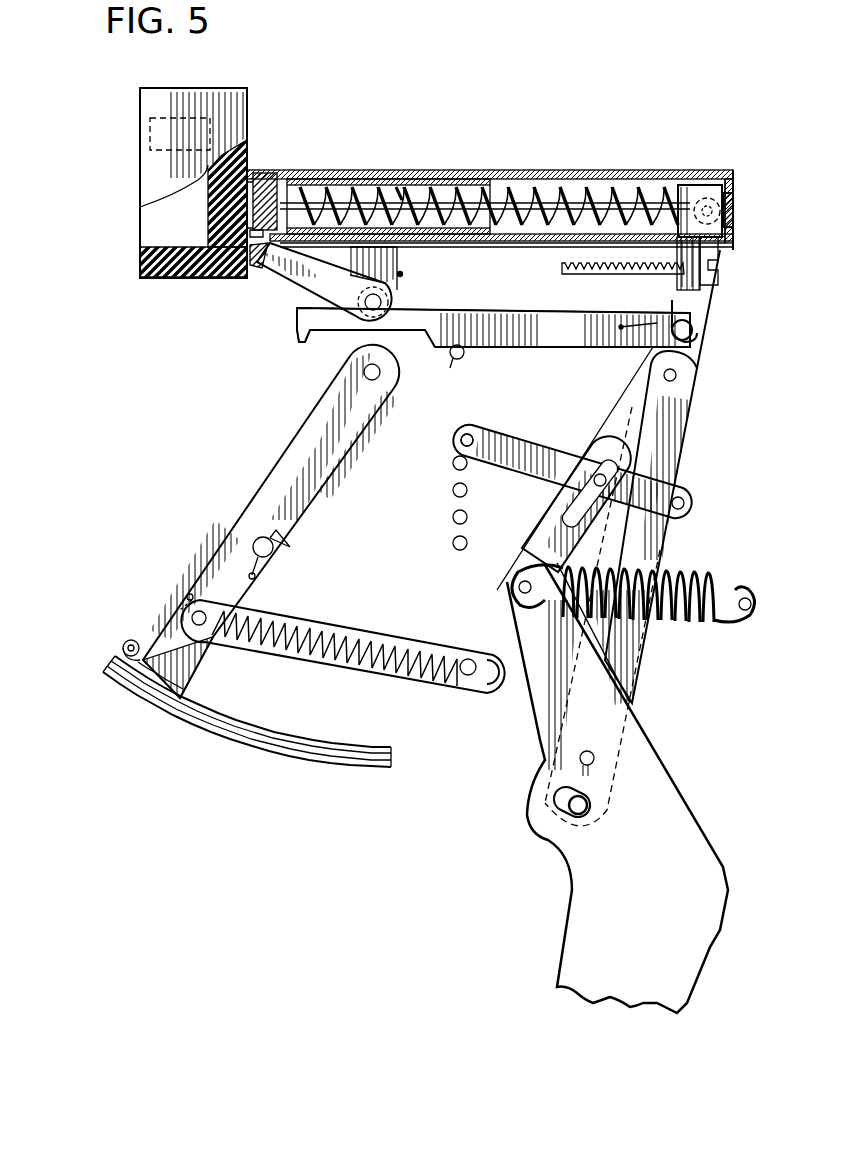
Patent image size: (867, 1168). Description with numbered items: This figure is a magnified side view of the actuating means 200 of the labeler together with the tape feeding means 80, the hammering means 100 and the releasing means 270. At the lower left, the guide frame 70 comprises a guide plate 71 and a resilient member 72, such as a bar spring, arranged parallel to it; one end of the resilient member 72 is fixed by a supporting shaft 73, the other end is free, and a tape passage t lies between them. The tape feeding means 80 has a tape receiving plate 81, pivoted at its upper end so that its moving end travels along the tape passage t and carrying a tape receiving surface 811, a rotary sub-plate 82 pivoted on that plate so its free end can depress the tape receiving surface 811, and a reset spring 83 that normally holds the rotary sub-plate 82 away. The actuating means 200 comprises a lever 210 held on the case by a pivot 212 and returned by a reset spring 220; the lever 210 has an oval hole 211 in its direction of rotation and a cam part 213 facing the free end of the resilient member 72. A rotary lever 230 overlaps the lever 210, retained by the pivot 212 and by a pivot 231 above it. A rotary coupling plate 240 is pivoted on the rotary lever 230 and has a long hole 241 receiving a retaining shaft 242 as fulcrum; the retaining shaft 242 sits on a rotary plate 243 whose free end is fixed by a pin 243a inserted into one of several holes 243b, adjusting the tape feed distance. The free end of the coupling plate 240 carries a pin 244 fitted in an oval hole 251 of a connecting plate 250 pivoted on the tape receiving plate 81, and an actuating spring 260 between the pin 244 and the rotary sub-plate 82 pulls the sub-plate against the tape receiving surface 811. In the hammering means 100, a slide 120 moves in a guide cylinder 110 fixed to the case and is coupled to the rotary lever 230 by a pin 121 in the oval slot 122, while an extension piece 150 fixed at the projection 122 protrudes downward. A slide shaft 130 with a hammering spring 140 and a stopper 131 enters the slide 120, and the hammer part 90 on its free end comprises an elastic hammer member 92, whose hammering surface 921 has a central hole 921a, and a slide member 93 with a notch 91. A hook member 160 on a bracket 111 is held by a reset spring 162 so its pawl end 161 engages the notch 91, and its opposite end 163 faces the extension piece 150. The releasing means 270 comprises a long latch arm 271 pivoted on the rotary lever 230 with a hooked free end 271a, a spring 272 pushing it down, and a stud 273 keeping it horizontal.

The guide frame 70 is at (314, 812).
The guide plate 71 is at (258, 755).
The resilient member 72 is at (345, 762).
The supporting shaft 73 is at (122, 645).
The tape feeding means 80 is at (268, 470).
The tape receiving plate 81 is at (195, 670).
The tape receiving surface 811 is at (152, 698).
The rotary sub-plate 82 is at (168, 616).
The reset spring 83 is at (292, 547).
The hammer part 90 is at (205, 110).
The notch 91 is at (268, 172).
The hammer member 92 is at (157, 133).
The slide member 93 is at (497, 178).
The hammering surface 921 is at (140, 110).
The hole 921a is at (157, 223).
The hammering means 100 is at (520, 165).
The guide cylinder 110 is at (560, 170).
The bracket 111 is at (440, 250).
The slide 120 is at (685, 185).
The pin 121 is at (705, 198).
The projection 122 is at (698, 185).
The slide shaft 130 is at (378, 186).
The stopper 131 is at (730, 193).
The hammering spring 140 is at (330, 200).
The extension piece 150 is at (560, 271).
The hook member 160 is at (398, 298).
The pawl end 161 is at (252, 272).
The reset spring 162 is at (405, 274).
The end 163 is at (400, 186).
The actuating means 200 is at (447, 703).
The lever 210 is at (573, 953).
The oval hole 211 is at (566, 812).
The pivot 212 is at (588, 805).
The cam part 213 is at (536, 808).
The reset spring 220 is at (690, 625).
The rotary lever 230 is at (618, 680).
The pivot 231 is at (595, 758).
The rotary coupling plate 240 is at (540, 556).
The long hole 241 is at (572, 516).
The retaining shaft 242 is at (628, 455).
The rotary plate 243 is at (647, 487).
The pin 243a is at (478, 430).
The holes 243b is at (452, 490).
The pin 244 is at (462, 660).
The connecting plate 250 is at (385, 635).
The oval hole 251 is at (487, 686).
The actuating spring 260 is at (396, 662).
The releasing means 270 is at (590, 350).
The long latch arm 271 is at (545, 348).
The free end 271a is at (298, 335).
The spring 272 is at (690, 340).
The stud 273 is at (455, 362).
The tape passage t is at (238, 748).